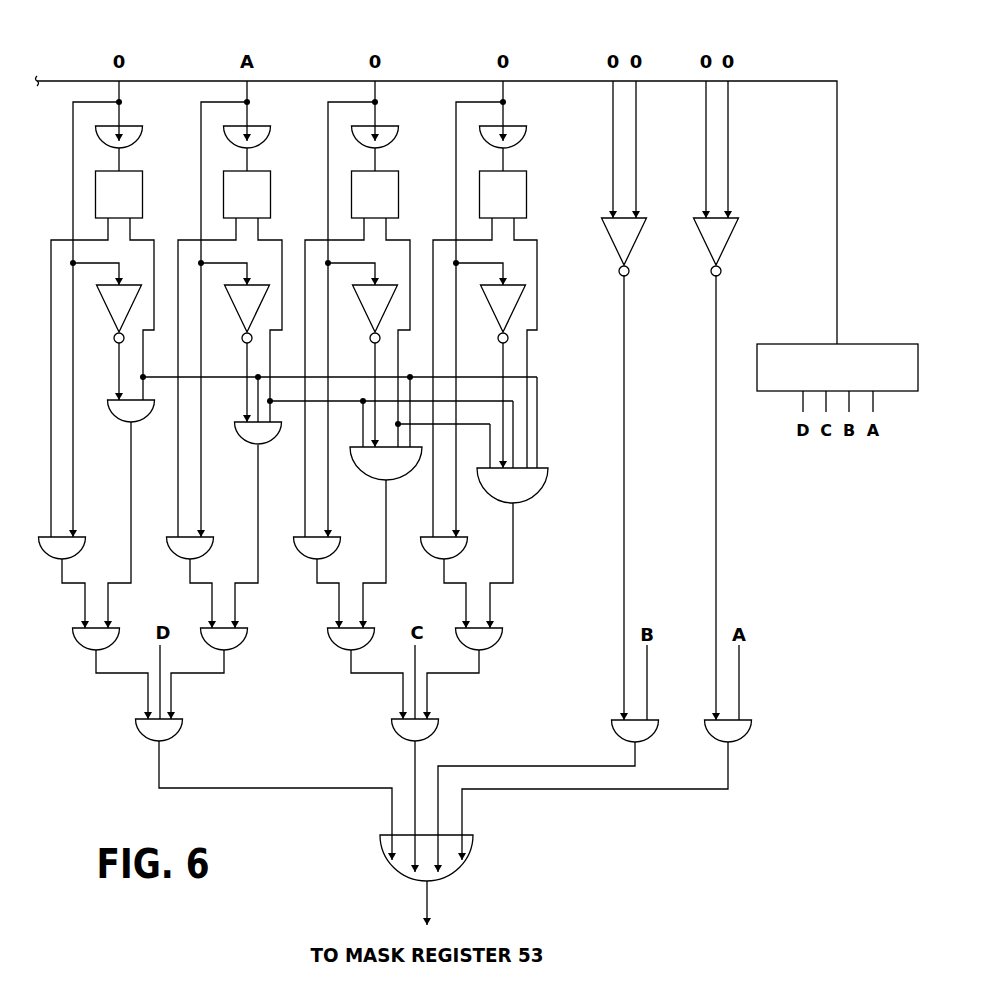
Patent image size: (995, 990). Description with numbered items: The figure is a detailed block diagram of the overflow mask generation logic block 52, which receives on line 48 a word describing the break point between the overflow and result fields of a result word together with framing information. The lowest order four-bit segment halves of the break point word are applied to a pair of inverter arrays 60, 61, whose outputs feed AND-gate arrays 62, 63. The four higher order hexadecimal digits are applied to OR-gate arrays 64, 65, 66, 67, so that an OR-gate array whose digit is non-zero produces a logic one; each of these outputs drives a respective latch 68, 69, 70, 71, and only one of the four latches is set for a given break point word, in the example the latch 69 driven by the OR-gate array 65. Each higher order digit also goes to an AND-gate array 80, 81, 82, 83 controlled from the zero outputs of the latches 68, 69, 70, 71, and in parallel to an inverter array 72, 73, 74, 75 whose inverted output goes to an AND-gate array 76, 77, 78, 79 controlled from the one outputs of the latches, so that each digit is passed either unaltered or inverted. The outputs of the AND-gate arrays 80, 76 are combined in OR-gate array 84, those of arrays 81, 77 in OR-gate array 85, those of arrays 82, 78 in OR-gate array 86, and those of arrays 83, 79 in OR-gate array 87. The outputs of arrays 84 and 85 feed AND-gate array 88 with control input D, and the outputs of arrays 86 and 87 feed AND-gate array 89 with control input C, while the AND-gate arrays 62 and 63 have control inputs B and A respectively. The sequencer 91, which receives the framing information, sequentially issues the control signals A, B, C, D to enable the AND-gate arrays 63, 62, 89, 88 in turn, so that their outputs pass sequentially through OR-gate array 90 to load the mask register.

The line 48 is at (72, 80).
The overflow mask generation logic block 52 is at (822, 520).
The inverter array 60 is at (612, 238).
The inverter array 61 is at (706, 240).
The AND-gate array 62 is at (653, 738).
The AND-gate array 63 is at (746, 738).
The OR-gate array 64 is at (133, 125).
The OR-gate array 65 is at (262, 125).
The OR-gate array 66 is at (390, 125).
The OR-gate array 67 is at (518, 125).
The latch 68 is at (143, 187).
The latch 69 is at (271, 187).
The latch 70 is at (399, 187).
The latch 71 is at (527, 207).
The inverter array 72 is at (112, 313).
The inverter array 73 is at (240, 313).
The inverter array 74 is at (368, 313).
The inverter array 75 is at (496, 313).
The AND-gate array 76 is at (117, 418).
The AND-gate array 77 is at (245, 441).
The AND-gate array 78 is at (371, 475).
The AND-gate array 79 is at (492, 496).
The AND-gate array 80 is at (77, 556).
The AND-gate array 81 is at (173, 560).
The AND-gate array 82 is at (301, 560).
The AND-gate array 83 is at (429, 560).
The OR-gate array 84 is at (77, 645).
The OR-gate array 85 is at (247, 648).
The OR-gate array 86 is at (330, 648).
The OR-gate array 87 is at (500, 640).
The AND-gate array 88 is at (143, 738).
The AND-gate array 89 is at (396, 737).
The OR-gate array 90 is at (392, 875).
The sequencer 91 is at (821, 344).